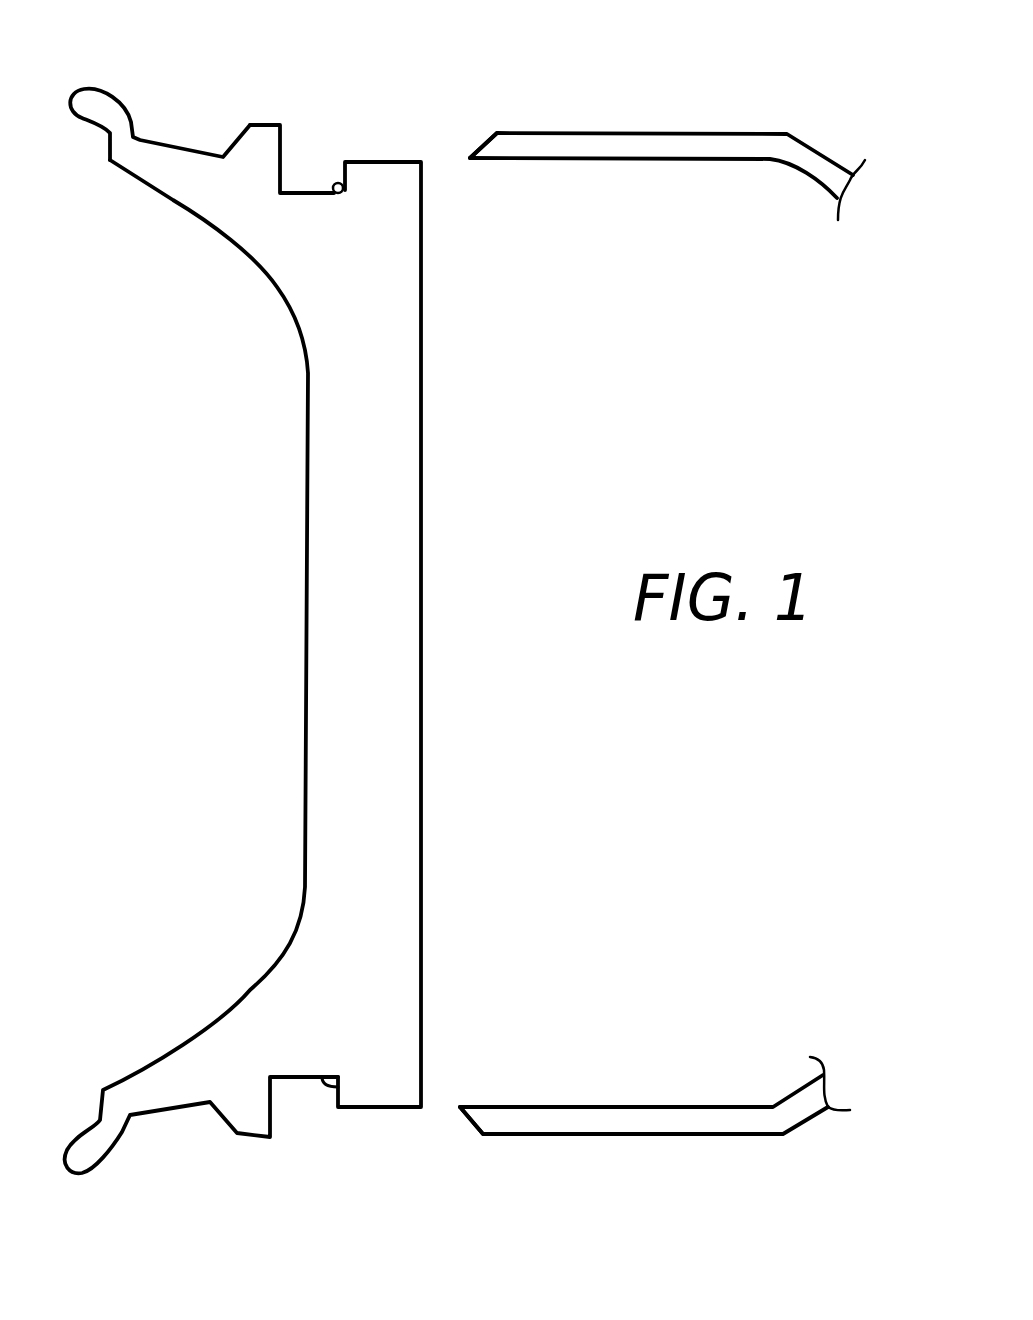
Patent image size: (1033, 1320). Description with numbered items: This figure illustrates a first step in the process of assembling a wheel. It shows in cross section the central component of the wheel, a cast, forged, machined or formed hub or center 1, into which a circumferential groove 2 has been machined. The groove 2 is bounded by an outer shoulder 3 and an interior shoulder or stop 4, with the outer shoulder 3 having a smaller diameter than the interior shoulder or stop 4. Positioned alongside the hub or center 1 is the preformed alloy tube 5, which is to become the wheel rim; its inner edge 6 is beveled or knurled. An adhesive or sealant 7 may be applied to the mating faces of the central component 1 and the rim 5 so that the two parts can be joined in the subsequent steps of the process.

The hub or center 1 is at (217, 233).
The circumferential groove 2 is at (308, 187).
The outer shoulder 3 is at (430, 202).
The interior shoulder or stop 4 is at (270, 121).
The preformed alloy tube 5 is at (648, 133).
The inner edge 6 is at (482, 143).
The adhesive or sealant 7 is at (342, 196).